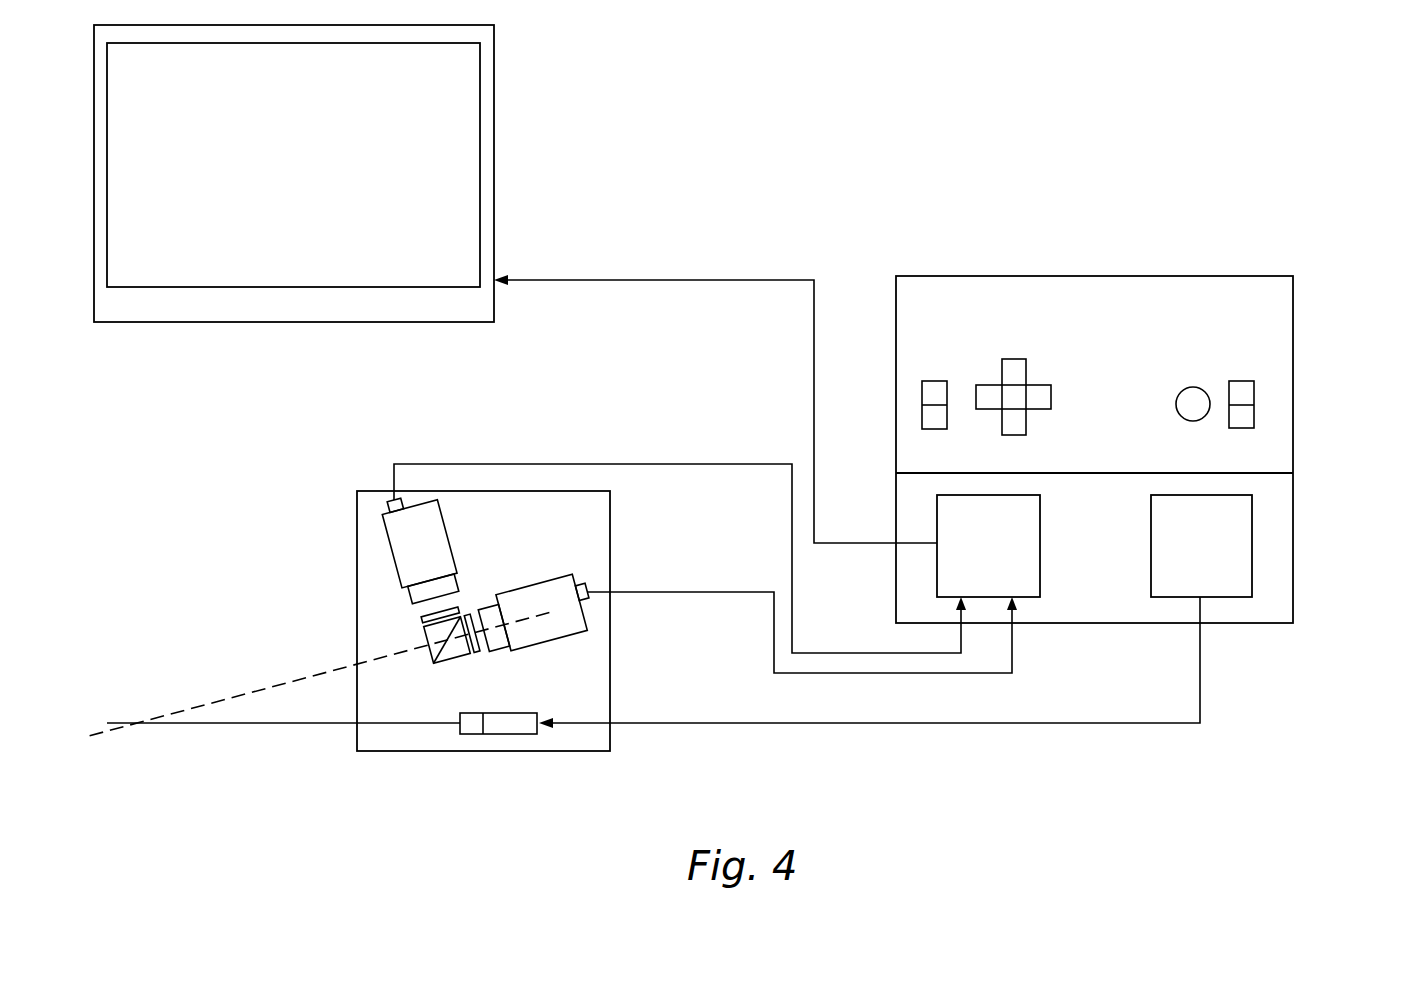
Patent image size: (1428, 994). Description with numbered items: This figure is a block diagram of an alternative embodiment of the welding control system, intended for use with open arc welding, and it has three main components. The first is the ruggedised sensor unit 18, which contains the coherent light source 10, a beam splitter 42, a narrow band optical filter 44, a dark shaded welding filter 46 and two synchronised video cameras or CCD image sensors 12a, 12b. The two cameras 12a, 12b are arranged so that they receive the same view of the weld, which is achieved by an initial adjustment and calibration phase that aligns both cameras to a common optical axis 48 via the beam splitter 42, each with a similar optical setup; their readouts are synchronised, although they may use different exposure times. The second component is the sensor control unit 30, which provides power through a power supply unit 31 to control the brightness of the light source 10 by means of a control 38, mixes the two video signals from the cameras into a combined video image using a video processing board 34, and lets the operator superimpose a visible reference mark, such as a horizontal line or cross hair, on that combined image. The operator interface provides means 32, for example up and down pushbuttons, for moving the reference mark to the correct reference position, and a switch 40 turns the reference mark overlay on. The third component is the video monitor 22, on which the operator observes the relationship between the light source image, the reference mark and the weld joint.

The coherent light source 10 is at (517, 728).
The video camera 12a is at (548, 641).
The video camera 12b is at (390, 548).
The sensor unit 18 is at (543, 490).
The video monitor 22 is at (495, 168).
The sensor control unit 30 is at (1192, 275).
The power supply unit 31 is at (1216, 595).
The operator interface means 32 is at (1000, 358).
The video processing board 34 is at (1029, 595).
The light source control 38 is at (1208, 393).
The switch 40 is at (920, 392).
The beam splitter 42 is at (428, 638).
The narrow band optical filter 44 is at (420, 607).
The dark shaded welding filter 46 is at (478, 623).
The common optical axis 48 is at (330, 671).